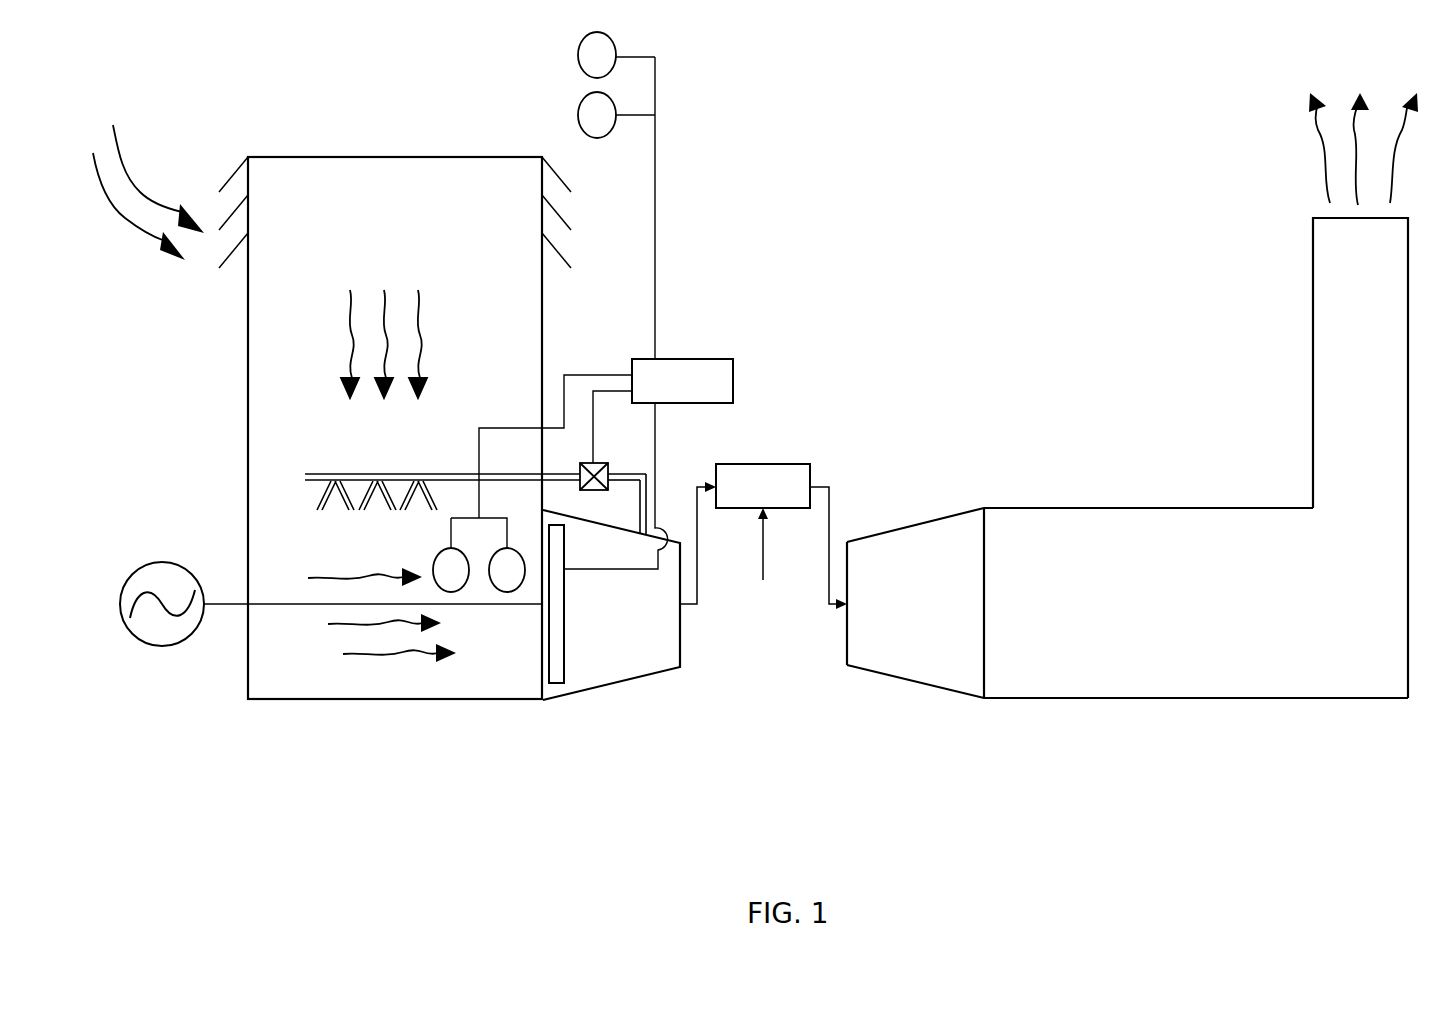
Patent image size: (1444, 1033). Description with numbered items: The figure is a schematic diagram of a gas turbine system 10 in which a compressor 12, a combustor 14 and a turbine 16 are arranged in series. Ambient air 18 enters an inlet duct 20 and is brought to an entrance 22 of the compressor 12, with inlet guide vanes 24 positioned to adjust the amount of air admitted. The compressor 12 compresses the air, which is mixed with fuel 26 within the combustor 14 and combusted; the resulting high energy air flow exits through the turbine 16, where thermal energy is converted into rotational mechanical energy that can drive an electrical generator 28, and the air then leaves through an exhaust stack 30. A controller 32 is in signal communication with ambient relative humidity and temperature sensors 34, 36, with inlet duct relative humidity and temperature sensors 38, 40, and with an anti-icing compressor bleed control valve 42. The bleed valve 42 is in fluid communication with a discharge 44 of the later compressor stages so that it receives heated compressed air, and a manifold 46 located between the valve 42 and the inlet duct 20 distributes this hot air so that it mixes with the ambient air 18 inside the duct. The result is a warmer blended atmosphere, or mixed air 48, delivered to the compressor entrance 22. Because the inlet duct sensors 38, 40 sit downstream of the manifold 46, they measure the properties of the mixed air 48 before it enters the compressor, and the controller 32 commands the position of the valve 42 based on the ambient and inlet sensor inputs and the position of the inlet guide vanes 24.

The turbine system 10 is at (626, 794).
The compressor 12 is at (637, 679).
The combustor 14 is at (778, 463).
The turbine 16 is at (868, 670).
The ambient air 18 is at (142, 191).
The inlet duct 20 is at (248, 388).
The entrance of the compressor 22 is at (527, 672).
The inlet guide vanes 24 is at (564, 636).
The fuel 26 is at (765, 558).
The electrical generator 28 is at (164, 562).
The exhaust stack 30 is at (1313, 303).
The controller 32 is at (734, 384).
The ambient relative humidity sensor 34 is at (600, 138).
The ambient temperature sensor 36 is at (616, 50).
The inlet duct relative humidity sensor 38 is at (435, 570).
The inlet duct temperature sensor 40 is at (491, 565).
The anti-icing compressor bleed control valve 42 is at (609, 470).
The discharge 44 is at (648, 533).
The manifold 46 is at (333, 474).
The mixed air 48 is at (380, 615).